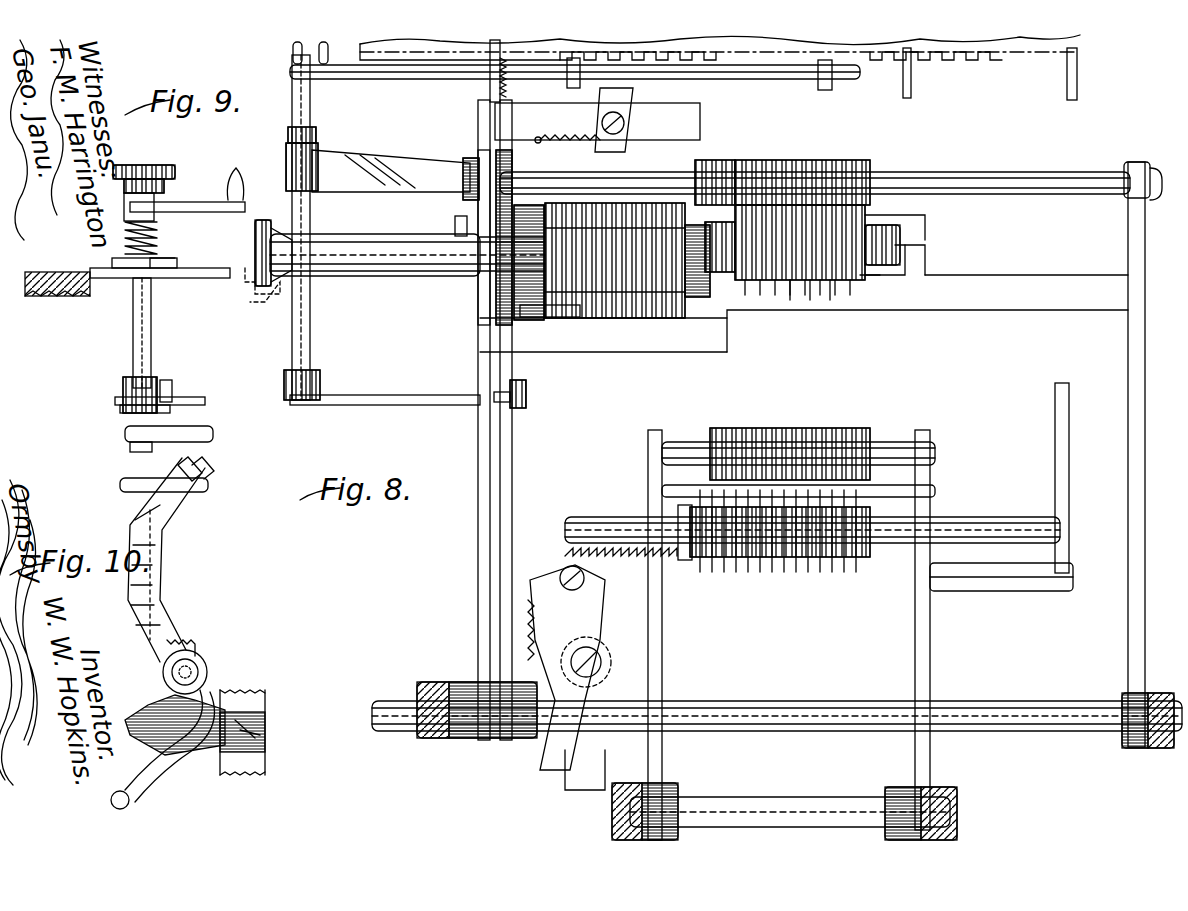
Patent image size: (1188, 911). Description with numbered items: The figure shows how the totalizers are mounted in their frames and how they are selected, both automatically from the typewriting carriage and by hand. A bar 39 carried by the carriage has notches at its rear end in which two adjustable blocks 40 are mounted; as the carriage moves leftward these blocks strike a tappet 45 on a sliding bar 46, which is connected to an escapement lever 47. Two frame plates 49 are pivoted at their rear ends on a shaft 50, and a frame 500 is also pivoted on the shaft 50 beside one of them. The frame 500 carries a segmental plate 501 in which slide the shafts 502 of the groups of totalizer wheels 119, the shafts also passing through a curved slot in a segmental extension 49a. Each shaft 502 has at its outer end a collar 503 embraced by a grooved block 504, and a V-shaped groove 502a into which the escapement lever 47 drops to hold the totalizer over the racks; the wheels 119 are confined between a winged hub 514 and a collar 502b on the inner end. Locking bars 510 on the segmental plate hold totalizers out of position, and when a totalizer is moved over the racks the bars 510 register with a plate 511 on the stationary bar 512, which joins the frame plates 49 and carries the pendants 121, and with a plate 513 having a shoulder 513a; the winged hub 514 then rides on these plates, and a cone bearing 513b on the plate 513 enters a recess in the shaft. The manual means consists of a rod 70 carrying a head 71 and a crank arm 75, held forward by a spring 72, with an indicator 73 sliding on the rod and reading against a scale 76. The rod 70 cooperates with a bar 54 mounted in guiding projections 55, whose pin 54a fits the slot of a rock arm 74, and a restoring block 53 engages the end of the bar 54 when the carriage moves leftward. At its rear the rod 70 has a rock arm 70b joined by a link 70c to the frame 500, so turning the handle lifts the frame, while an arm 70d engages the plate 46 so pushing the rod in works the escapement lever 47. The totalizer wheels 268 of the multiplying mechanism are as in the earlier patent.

In FIG. 8, the bar 39 is at (990, 58).
In FIG. 8, the adjustable blocks 40 is at (490, 98).
In FIG. 8, the tappet 45 is at (635, 104).
In FIG. 8, the sliding bar 46 is at (597, 123).
In FIG. 8, the escapement lever 47 is at (480, 303).
In FIG. 8, the frame plates 49 is at (478, 532).
In FIG. 8, the segmental extension 49a is at (546, 341).
In FIG. 8, the shaft 50 is at (695, 732).
In FIG. 8, the restoring block 53 is at (1080, 88).
In FIG. 9, the bar 54 is at (202, 440).
In FIG. 10, the bar 54 is at (140, 482).
In FIG. 8, the bar 54 is at (425, 80).
In FIG. 9, the pin or projection 54a is at (145, 410).
In FIG. 10, the pin or projection 54a is at (190, 495).
In FIG. 8, the pin or projection 54a is at (295, 55).
In FIG. 8, the guiding projections 55 is at (566, 80).
In FIG. 9, the rod 70 is at (150, 365).
In FIG. 8, the rod 70 is at (312, 104).
In FIG. 8, the rock arm 70b is at (352, 407).
In FIG. 8, the link 70c is at (526, 408).
In FIG. 8, the arm 70d is at (400, 160).
In FIG. 9, the head 71 is at (168, 172).
In FIG. 10, the head 71 is at (195, 668).
In FIG. 9, the spring 72 is at (125, 240).
In FIG. 9, the indicator 73 is at (182, 270).
In FIG. 10, the indicator 73 is at (160, 703).
In FIG. 9, the rock arm 74 is at (203, 397).
In FIG. 10, the rock arm 74 is at (152, 572).
In FIG. 9, the crank arm 75 is at (135, 212).
In FIG. 10, the crank arm 75 is at (135, 790).
In FIG. 9, the scale 76 is at (105, 285).
In FIG. 10, the scale 76 is at (213, 760).
In FIG. 8, the totalizer wheels 119 is at (825, 300).
In FIG. 8, the pendants 121 is at (900, 240).
In FIG. 8, the totalizer wheels 268 is at (805, 572).
In FIG. 8, the frame 500 is at (512, 480).
In FIG. 8, the segmental plate 501 is at (470, 232).
In FIG. 8, the totalizer shafts 502 is at (380, 240).
In FIG. 8, the V-shaped groove 502a is at (258, 240).
In FIG. 8, the collar 502b is at (940, 232).
In FIG. 8, the collar 503 is at (268, 258).
In FIG. 8, the grooved block 504 is at (263, 301).
In FIG. 8, the totalizer locking bars 510 is at (640, 205).
In FIG. 8, the plate 511 is at (760, 190).
In FIG. 8, the stationary bar 512 is at (945, 172).
In FIG. 8, the plate 513 is at (927, 313).
In FIG. 8, the shoulder 513a is at (705, 302).
In FIG. 8, the cone bearing 513b is at (905, 258).
In FIG. 8, the winged hub 514 is at (718, 190).